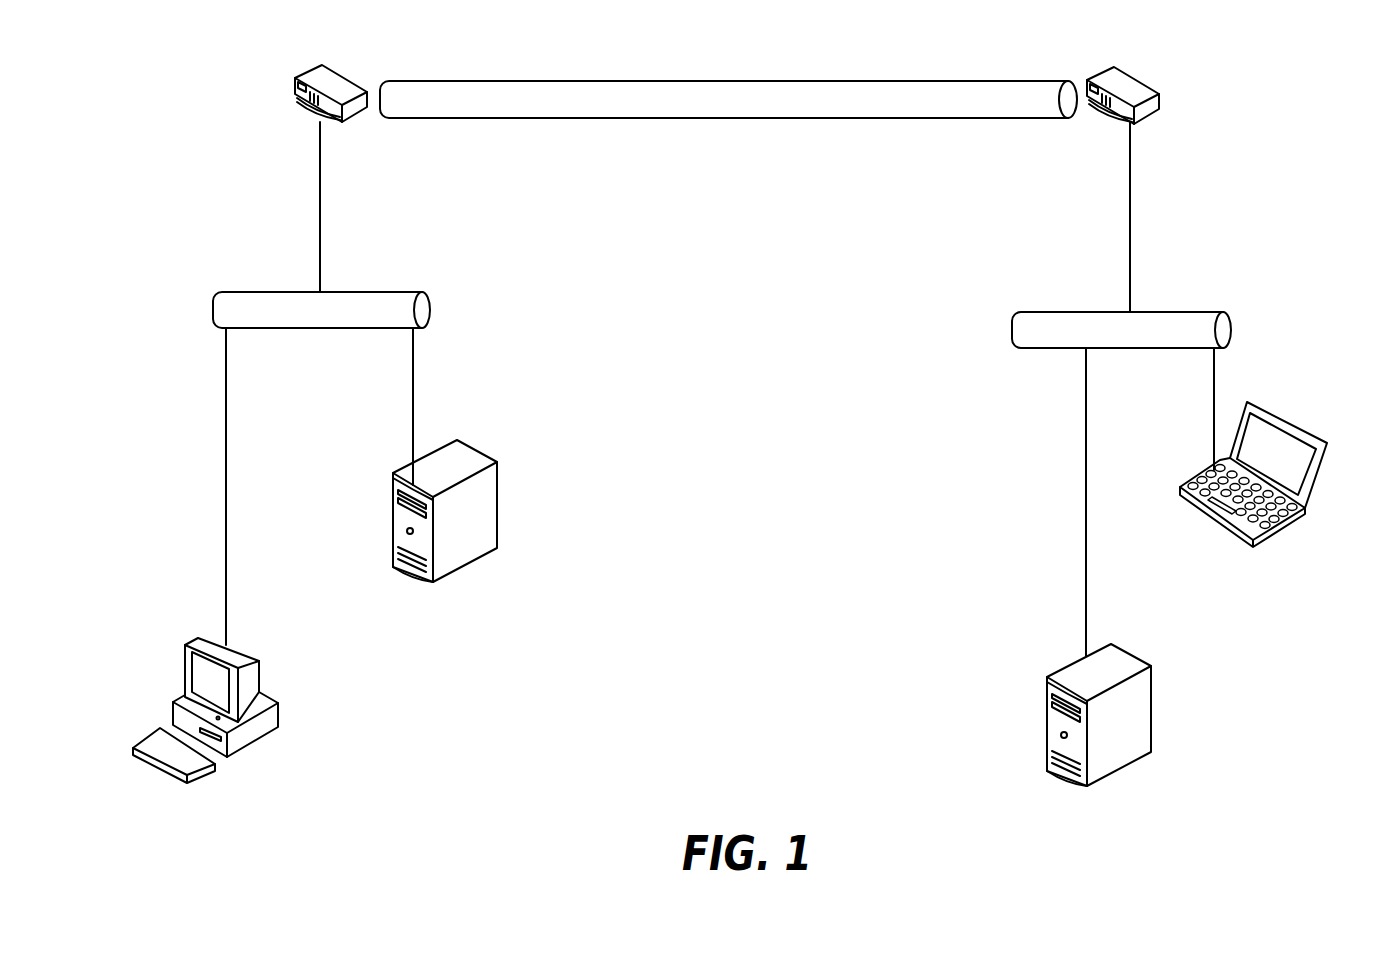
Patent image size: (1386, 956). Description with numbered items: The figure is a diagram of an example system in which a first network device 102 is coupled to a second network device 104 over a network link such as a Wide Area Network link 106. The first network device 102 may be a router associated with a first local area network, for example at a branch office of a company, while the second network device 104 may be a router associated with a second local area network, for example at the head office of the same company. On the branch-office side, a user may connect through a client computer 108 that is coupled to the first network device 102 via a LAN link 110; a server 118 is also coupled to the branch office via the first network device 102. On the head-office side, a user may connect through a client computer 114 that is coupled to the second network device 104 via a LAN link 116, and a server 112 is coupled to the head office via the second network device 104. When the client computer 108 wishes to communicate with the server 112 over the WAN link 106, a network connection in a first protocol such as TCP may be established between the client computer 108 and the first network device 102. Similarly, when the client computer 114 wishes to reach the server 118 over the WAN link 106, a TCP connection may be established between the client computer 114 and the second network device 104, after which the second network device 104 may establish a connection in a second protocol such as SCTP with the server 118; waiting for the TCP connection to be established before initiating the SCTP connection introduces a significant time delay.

The first network device 102 is at (342, 78).
The second network device 104 is at (1137, 82).
The Wide Area Network (WAN) link 106 is at (622, 81).
The client computer 108 is at (245, 650).
The LAN link 110 is at (392, 292).
The server 112 is at (1133, 653).
The client computer 114 is at (1286, 420).
The LAN link 116 is at (1160, 312).
The server 118 is at (497, 485).